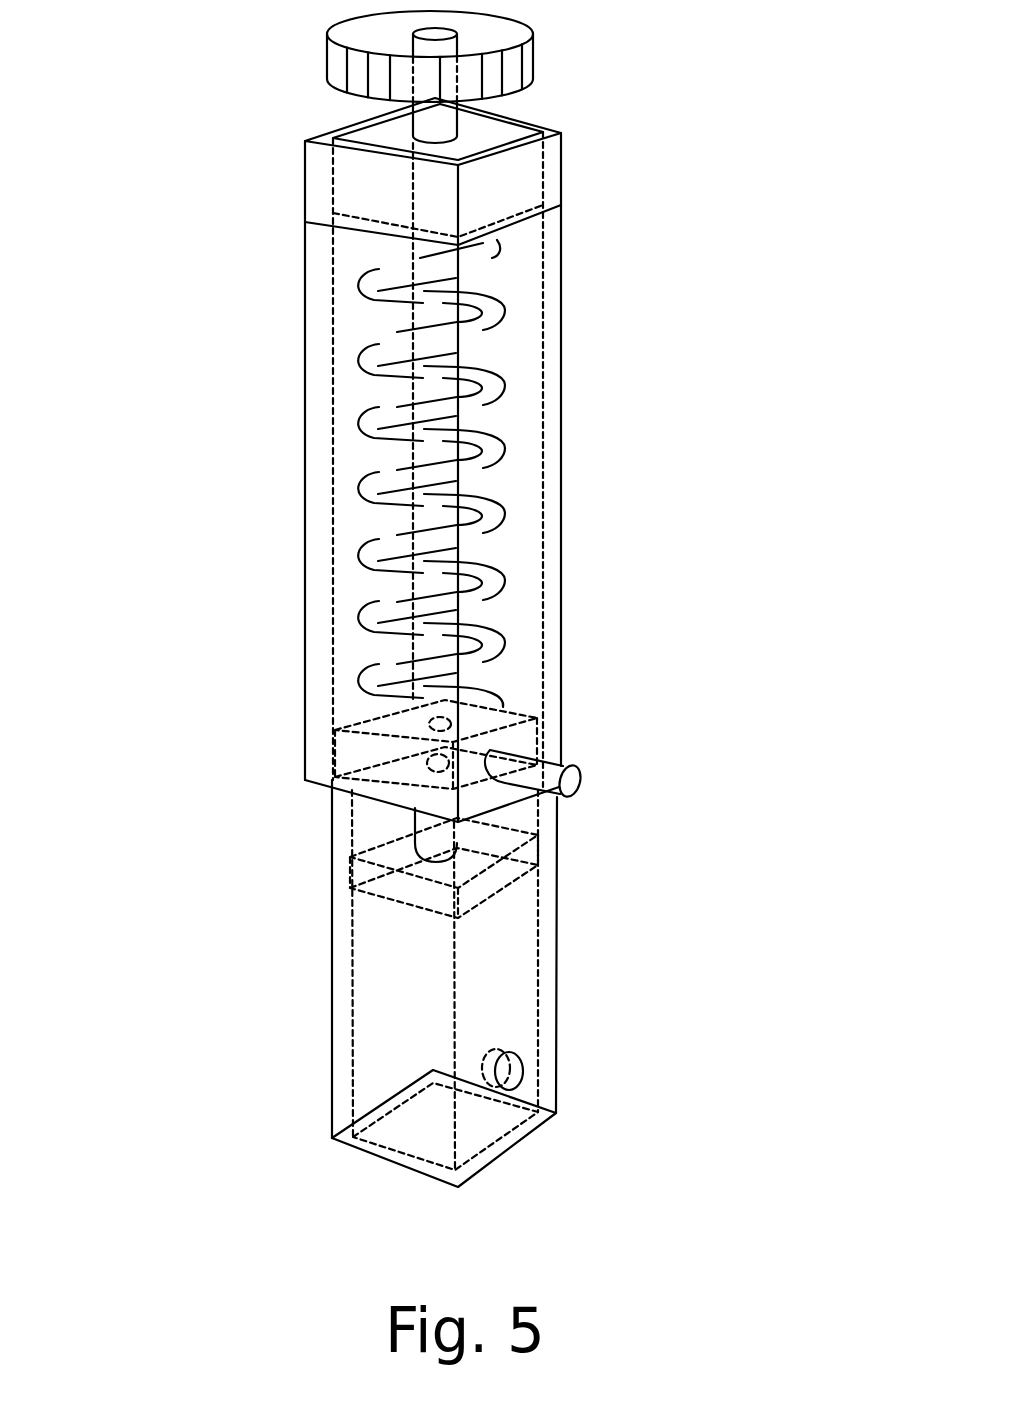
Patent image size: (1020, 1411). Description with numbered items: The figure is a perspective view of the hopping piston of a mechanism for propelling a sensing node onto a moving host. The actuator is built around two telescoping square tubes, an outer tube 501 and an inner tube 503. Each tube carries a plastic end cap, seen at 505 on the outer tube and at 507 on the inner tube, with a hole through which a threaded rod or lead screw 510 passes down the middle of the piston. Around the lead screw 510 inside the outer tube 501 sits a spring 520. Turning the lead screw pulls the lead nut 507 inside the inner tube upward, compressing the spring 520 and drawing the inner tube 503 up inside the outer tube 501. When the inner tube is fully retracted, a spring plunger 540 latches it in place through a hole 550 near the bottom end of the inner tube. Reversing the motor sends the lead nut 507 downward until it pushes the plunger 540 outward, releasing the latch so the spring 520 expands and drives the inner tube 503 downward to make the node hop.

The outer tube 501 is at (562, 388).
The inner tube 503 is at (557, 974).
The plastic end cap 505 is at (535, 188).
The lead nut 507 is at (540, 858).
The threaded rod (lead screw) 510 is at (440, 121).
The spring 520 is at (365, 358).
The spring plunger 540 is at (548, 762).
The hole 550 is at (530, 1066).